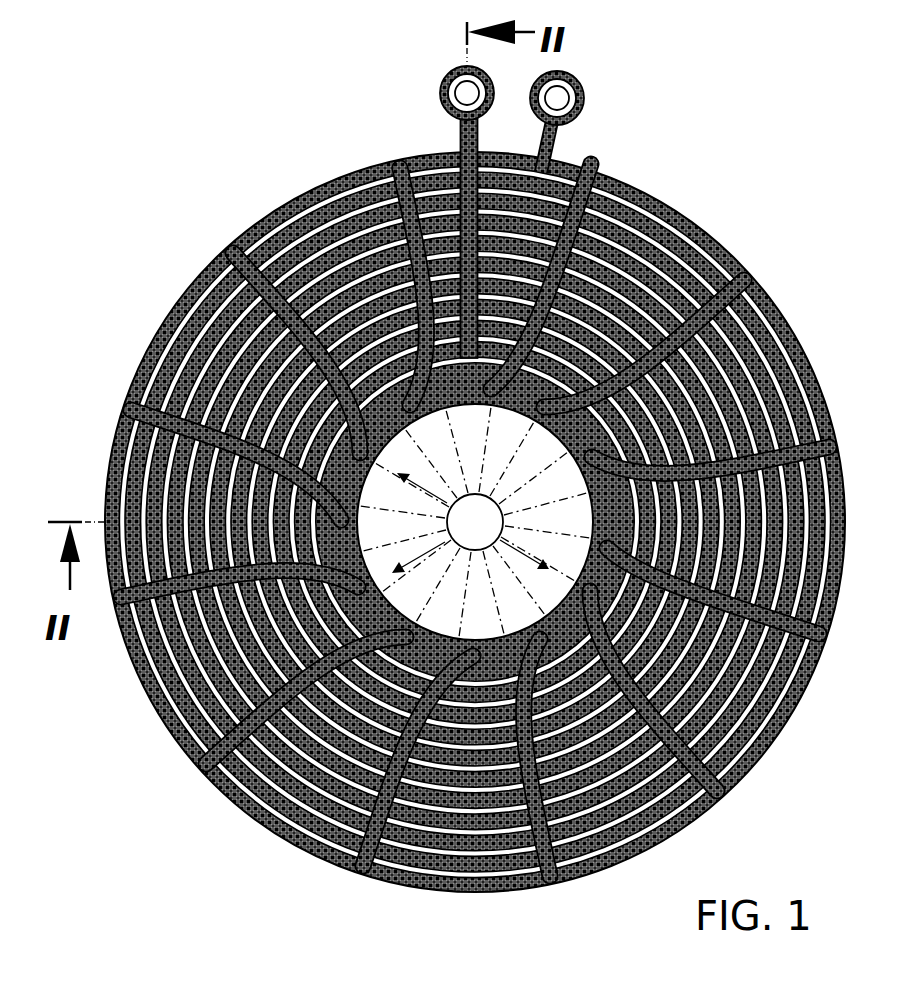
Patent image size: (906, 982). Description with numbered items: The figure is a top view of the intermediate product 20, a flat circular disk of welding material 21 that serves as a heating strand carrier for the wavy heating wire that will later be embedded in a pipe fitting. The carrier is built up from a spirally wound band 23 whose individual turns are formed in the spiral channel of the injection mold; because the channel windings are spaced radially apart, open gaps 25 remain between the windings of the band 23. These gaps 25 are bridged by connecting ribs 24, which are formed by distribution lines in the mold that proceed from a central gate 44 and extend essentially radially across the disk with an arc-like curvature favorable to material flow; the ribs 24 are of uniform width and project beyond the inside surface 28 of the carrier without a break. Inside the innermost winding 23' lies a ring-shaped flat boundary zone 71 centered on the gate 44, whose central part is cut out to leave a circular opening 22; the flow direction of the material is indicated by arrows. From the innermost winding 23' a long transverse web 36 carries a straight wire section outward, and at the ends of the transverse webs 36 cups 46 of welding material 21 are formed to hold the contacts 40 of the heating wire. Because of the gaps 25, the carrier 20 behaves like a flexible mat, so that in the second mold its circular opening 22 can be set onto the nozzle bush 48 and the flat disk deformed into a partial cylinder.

The intermediate product 20 is at (203, 242).
The welding material 21 is at (330, 195).
The circular opening 22 is at (402, 492).
The band 23 is at (475, 522).
The innermost winding 23' is at (474, 515).
The connecting ribs 24 is at (790, 648).
The open gaps 25 is at (778, 322).
The inside surface 28 is at (183, 740).
The transverse webs 36 is at (458, 140).
The contacts 40 is at (460, 93).
The central gate 44 is at (490, 534).
The cups 46 is at (442, 76).
The nozzle bush 48 is at (775, 735).
The flat boundary zone 71 is at (598, 497).